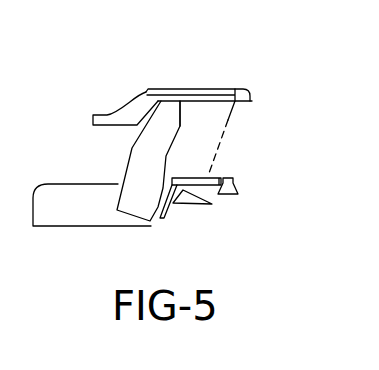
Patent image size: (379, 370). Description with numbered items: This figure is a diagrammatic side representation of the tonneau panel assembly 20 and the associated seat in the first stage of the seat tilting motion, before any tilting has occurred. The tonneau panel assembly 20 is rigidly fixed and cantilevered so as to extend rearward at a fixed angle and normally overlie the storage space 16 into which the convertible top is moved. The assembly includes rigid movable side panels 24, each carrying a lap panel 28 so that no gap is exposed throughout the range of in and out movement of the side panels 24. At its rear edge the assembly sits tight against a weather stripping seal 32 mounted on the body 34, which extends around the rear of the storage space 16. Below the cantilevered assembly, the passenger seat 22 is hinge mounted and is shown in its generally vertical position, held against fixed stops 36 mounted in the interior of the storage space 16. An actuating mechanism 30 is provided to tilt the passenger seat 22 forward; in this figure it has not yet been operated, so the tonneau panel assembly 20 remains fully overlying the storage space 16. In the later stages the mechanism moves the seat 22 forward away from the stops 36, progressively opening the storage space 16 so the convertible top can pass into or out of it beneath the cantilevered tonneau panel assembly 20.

The storage space 16 is at (204, 148).
The tonneau panel assembly 20 is at (210, 72).
The passenger seat 22 is at (151, 183).
The side panels 24 is at (106, 113).
The lap panel 28 is at (163, 88).
The actuating mechanism 30 is at (270, 151).
The weather stripping seal 32 is at (257, 72).
The body 34 is at (262, 100).
The fixed stops 36 is at (171, 205).